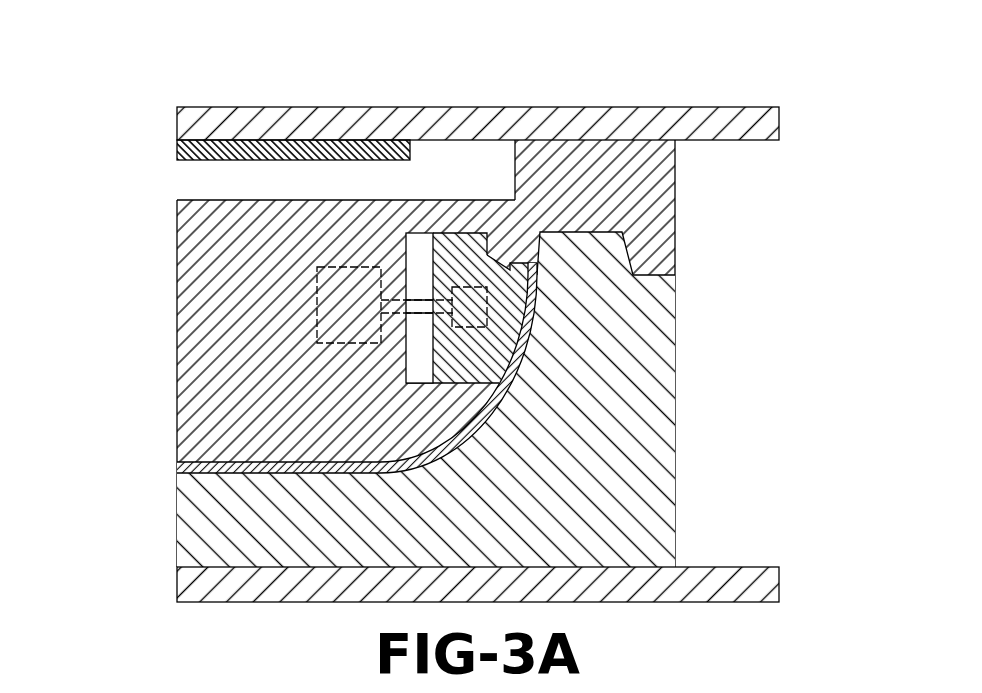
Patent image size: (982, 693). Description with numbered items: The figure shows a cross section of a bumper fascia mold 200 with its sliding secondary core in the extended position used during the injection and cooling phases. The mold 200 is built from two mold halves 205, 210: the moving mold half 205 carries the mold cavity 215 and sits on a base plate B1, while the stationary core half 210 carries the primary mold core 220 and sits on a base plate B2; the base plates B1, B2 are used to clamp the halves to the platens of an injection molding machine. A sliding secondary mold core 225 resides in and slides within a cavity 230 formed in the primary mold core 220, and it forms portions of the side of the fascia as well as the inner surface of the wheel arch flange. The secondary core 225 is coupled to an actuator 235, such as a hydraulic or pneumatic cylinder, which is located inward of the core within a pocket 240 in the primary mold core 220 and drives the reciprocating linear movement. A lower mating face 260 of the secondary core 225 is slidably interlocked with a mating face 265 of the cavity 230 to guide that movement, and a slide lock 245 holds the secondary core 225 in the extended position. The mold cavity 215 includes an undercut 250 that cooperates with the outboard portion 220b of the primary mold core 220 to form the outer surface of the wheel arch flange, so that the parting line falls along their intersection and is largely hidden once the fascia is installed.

The mold 200 is at (105, 120).
The moving mold half 205 is at (515, 439).
The stationary mold half 210 is at (472, 312).
The mold cavity 215 is at (605, 510).
The primary mold core 220 is at (218, 273).
The outboard portion of the primary mold core 220b is at (643, 190).
The sliding secondary mold core 225 is at (495, 343).
The cavity 230 is at (421, 257).
The actuator 235 is at (337, 306).
The pocket 240 is at (337, 345).
The slide lock 245 is at (487, 320).
The undercut 250 is at (533, 268).
The lower mating face 260 is at (492, 262).
The mating face 265 is at (448, 238).
The base plate B1 is at (690, 552).
The base plate B2 is at (655, 107).